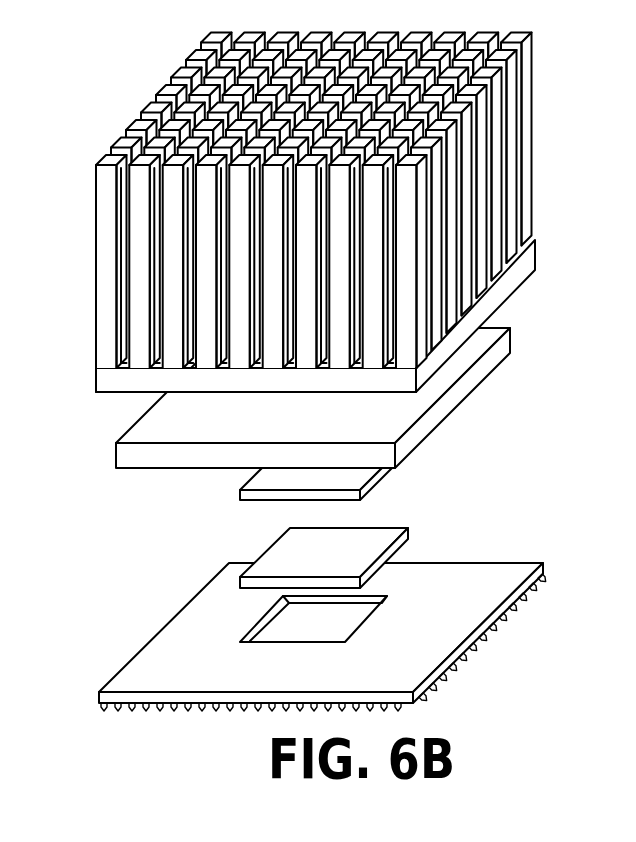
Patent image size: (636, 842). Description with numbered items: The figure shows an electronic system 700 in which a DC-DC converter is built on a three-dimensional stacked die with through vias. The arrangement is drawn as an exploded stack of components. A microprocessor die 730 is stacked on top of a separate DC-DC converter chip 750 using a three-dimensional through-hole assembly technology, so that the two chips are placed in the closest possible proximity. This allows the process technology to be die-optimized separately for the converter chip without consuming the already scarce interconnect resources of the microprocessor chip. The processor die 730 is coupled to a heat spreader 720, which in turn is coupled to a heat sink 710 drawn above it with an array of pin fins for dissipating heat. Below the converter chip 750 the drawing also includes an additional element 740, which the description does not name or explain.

The electronic system 700 is at (547, 777).
The heat sink 710 is at (512, 282).
The heat spreader 720 is at (457, 398).
The microprocessor die 730 is at (378, 482).
The substrate with pin grid array 740 is at (442, 682).
The DC-DC converter chip 750 is at (378, 567).